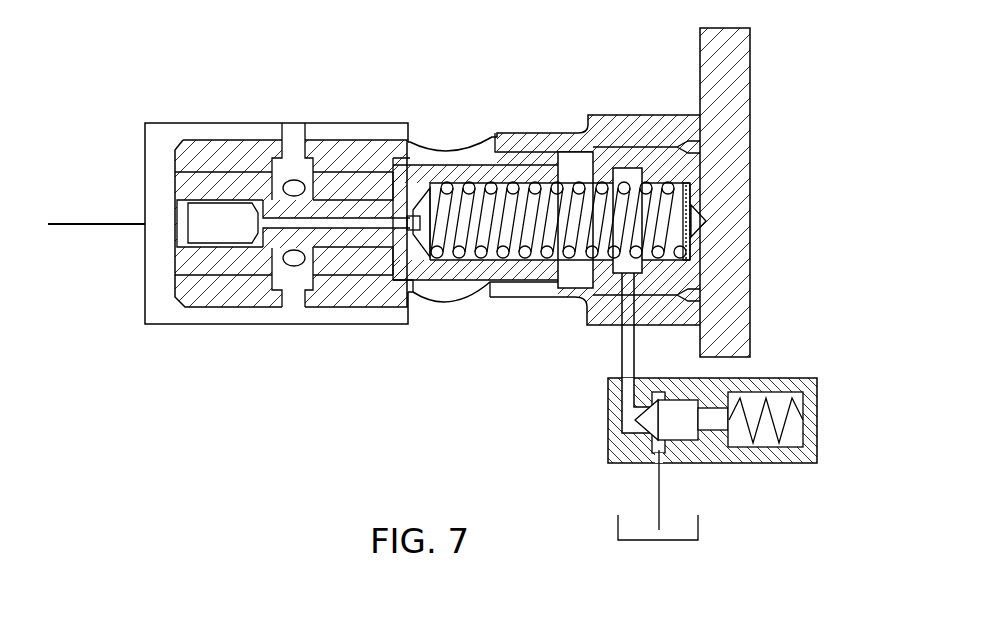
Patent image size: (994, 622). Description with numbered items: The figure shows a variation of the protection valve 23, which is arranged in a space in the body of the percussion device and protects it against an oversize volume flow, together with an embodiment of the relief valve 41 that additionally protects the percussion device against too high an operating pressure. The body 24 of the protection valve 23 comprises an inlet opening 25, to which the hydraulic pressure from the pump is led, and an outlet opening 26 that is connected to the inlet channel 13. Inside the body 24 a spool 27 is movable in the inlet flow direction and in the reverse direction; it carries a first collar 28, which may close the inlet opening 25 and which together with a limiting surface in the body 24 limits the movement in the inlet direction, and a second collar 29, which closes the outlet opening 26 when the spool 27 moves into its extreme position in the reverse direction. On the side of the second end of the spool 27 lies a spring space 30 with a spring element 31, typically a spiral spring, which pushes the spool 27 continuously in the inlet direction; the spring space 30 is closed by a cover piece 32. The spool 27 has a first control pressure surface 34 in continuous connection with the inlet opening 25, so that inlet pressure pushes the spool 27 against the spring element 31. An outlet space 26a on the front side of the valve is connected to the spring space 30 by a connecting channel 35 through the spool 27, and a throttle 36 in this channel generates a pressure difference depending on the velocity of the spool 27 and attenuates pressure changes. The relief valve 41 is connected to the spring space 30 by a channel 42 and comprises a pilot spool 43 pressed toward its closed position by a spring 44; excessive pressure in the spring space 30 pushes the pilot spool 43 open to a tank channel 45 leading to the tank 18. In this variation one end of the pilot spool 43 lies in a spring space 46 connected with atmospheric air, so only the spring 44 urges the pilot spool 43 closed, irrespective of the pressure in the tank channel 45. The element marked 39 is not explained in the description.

The inlet channel 13 is at (95, 222).
The tank 18 is at (643, 542).
The protection valve 23 is at (261, 46).
The body 24 is at (240, 290).
The inlet opening 25 is at (455, 153).
The outlet opening 26 is at (292, 146).
The outlet space 26a is at (157, 275).
The spool 27 is at (243, 190).
The first collar 28 is at (392, 168).
The second collar 29 is at (293, 280).
The spring space 30 is at (575, 165).
The spring element 31 is at (530, 228).
The cover piece 32 is at (720, 95).
The first control pressure surface 34 is at (498, 265).
The connecting channel 35 is at (345, 228).
The throttle 36 is at (412, 258).
The spring retainer 39 is at (560, 263).
The relief valve 41 is at (642, 431).
The channel 42 is at (625, 363).
The pilot spool 43 is at (650, 420).
The spring 44 is at (760, 428).
The tank channel 45 is at (661, 493).
The spring space 46 is at (790, 400).